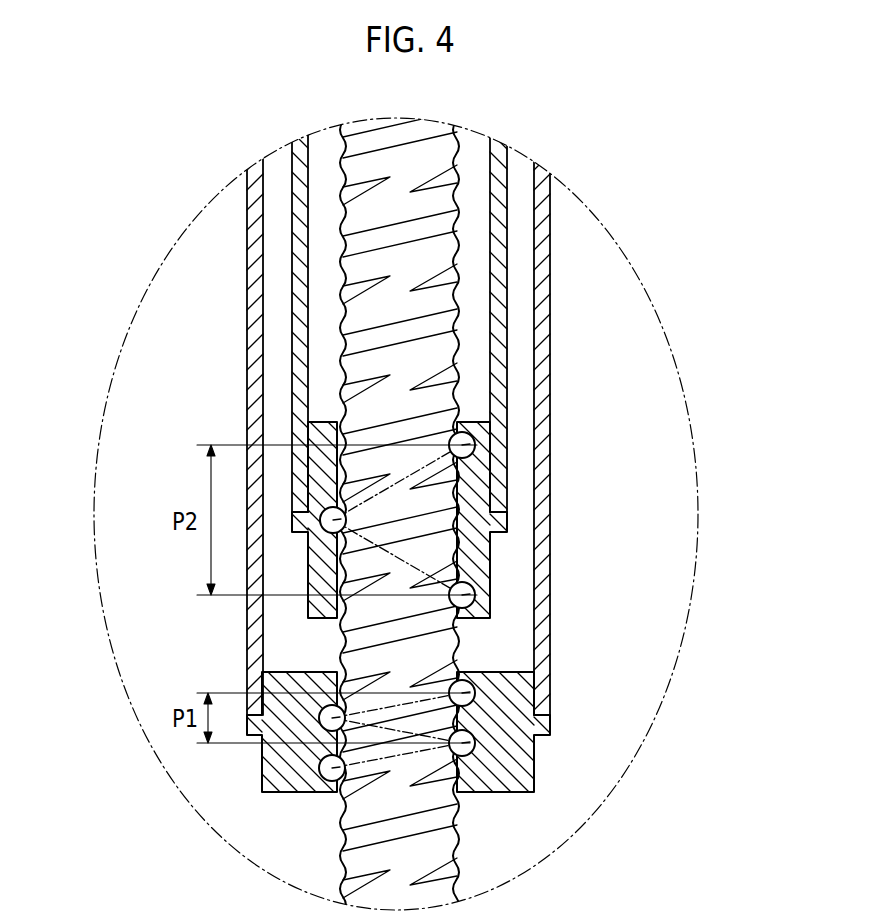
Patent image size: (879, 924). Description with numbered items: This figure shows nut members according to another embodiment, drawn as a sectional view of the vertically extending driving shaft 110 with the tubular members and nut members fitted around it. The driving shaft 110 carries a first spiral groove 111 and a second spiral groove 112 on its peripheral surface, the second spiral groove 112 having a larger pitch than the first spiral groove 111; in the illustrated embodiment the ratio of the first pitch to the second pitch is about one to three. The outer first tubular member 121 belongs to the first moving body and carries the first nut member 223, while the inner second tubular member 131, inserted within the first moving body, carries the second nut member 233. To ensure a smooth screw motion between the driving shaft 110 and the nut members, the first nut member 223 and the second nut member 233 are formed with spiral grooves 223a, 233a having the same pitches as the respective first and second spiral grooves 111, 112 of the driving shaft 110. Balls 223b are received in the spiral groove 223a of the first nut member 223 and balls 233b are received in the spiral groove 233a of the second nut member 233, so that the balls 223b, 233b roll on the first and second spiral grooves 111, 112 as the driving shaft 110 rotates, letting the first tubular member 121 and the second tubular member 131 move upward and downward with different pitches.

The driving shaft 110 is at (476, 308).
The first spiral groove 111 is at (403, 257).
The second spiral groove 112 is at (397, 283).
The first tubular member 121 is at (543, 625).
The second tubular member 131 is at (497, 430).
The first nut member 223 is at (520, 770).
The spiral groove of first nut member 223a is at (455, 683).
The balls of first nut member 223b is at (477, 745).
The second nut member 233 is at (483, 554).
The spiral groove of second nut member 233a is at (448, 425).
The balls of second nut member 233b is at (478, 594).